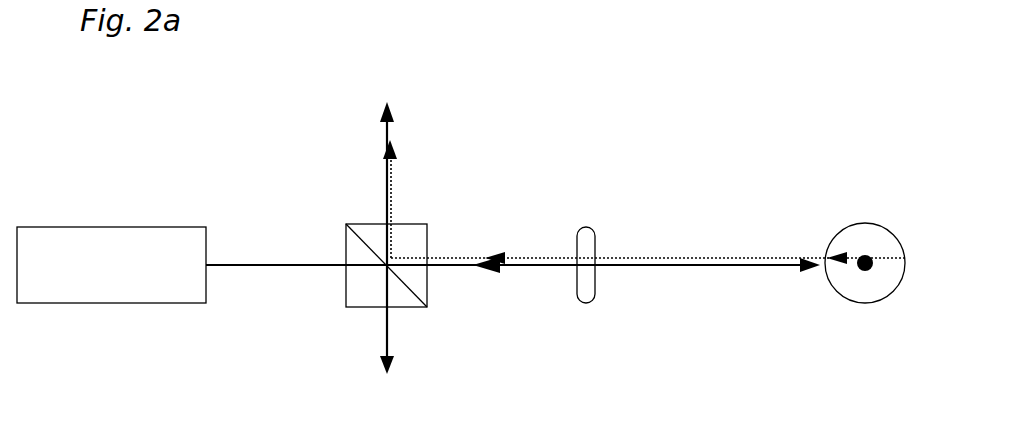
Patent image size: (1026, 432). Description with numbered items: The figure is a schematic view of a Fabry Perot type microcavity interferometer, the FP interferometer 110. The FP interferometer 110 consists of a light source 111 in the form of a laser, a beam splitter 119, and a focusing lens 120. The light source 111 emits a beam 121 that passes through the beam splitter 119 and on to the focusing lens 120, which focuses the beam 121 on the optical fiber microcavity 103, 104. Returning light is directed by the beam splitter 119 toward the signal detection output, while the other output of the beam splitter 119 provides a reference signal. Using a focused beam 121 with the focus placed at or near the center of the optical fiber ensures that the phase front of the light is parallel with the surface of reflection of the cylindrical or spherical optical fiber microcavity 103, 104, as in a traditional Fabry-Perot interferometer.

The FP interferometer 110 is at (150, 158).
The light source 111 is at (127, 304).
The beam splitter 119 is at (404, 222).
The focusing lens 120 is at (585, 303).
The beam 121 is at (736, 266).
The optical fiber microcavity 103 is at (848, 273).
The optical fiber microcavity 104 is at (865, 263).